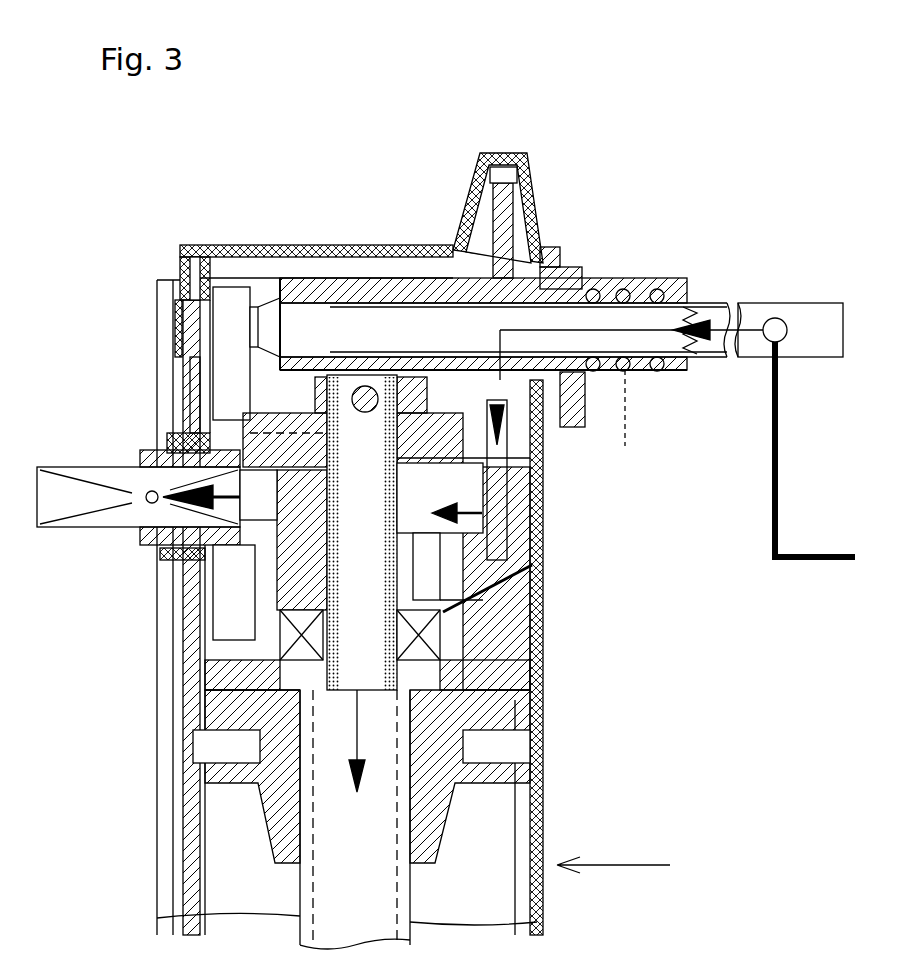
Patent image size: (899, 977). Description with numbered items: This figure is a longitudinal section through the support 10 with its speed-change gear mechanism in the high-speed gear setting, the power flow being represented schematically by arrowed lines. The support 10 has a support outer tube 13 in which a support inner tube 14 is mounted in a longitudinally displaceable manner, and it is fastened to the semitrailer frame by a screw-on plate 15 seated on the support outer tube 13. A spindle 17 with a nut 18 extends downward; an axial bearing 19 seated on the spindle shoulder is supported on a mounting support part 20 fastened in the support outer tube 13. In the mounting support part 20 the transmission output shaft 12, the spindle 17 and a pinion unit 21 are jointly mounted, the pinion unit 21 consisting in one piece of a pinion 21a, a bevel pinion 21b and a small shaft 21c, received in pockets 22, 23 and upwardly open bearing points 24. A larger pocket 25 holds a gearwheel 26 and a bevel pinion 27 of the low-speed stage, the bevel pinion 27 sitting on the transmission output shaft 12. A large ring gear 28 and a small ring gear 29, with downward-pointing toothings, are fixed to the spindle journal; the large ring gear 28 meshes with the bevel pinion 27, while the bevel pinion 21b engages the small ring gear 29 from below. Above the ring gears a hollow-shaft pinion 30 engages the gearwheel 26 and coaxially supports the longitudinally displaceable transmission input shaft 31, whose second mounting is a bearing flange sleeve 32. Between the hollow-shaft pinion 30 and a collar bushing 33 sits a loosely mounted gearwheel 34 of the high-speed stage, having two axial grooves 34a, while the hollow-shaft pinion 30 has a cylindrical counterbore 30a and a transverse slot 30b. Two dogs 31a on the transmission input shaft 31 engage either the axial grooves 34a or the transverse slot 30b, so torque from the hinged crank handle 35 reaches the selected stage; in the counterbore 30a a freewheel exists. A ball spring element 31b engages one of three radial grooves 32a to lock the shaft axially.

The support 10 is at (718, 887).
The transmission output shaft 12 is at (137, 483).
The support outer tube 13 is at (185, 843).
The support inner tube 14 is at (195, 885).
The screw-on plate 15 is at (160, 805).
The spindle 17 is at (345, 867).
The nut 18 is at (190, 722).
The axial bearing 19 is at (200, 680).
The mounting support part 20 is at (250, 600).
The pinion unit 21 is at (500, 600).
The pinion 21a is at (490, 560).
The bevel pinion 21b is at (520, 640).
The small shaft 21c is at (525, 548).
The pocket 22 is at (470, 565).
The pocket 23 is at (540, 670).
The bearing points 24 is at (540, 487).
The larger pocket 25 is at (245, 615).
The gearwheel 26 is at (225, 565).
The bevel pinion 27 is at (227, 598).
The large ring gear 28 is at (268, 452).
The small ring gear 29 is at (560, 447).
The hollow-shaft pinion 30 is at (225, 319).
The cylindrical counterbore 30a is at (488, 283).
The transverse slot 30b is at (465, 281).
The transmission input shaft 31 is at (623, 283).
The dogs 31a is at (520, 283).
The ball spring element 31b is at (657, 370).
The bearing flange sleeve 32 is at (577, 377).
The radial grooves 32a is at (625, 446).
The collar bushing 33 is at (592, 283).
The gearwheel 34 is at (442, 281).
The axial grooves 34a is at (556, 283).
The hinged crank handle 35 is at (790, 568).